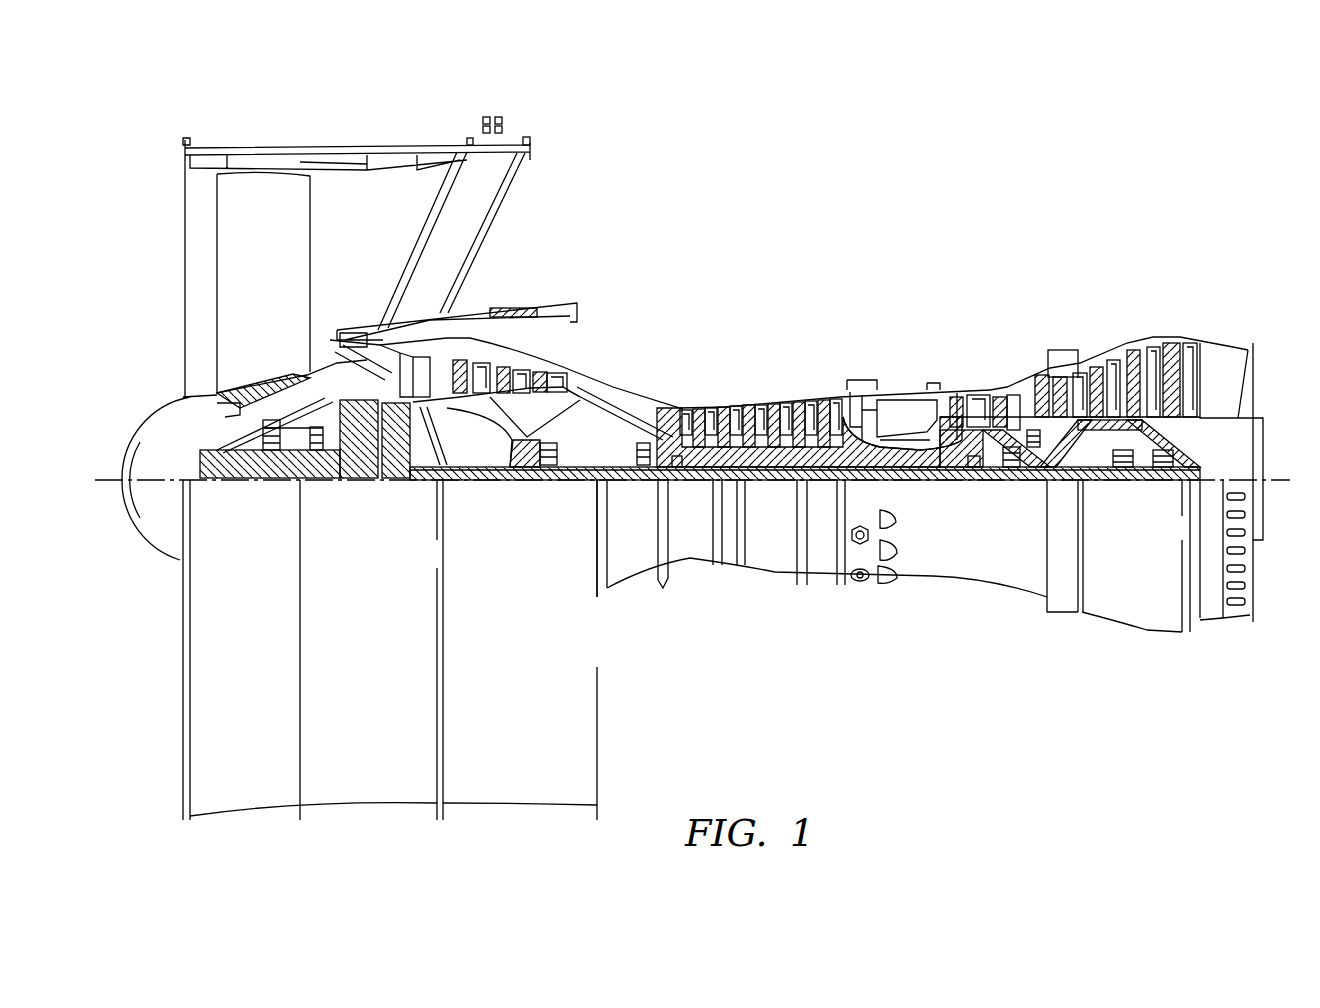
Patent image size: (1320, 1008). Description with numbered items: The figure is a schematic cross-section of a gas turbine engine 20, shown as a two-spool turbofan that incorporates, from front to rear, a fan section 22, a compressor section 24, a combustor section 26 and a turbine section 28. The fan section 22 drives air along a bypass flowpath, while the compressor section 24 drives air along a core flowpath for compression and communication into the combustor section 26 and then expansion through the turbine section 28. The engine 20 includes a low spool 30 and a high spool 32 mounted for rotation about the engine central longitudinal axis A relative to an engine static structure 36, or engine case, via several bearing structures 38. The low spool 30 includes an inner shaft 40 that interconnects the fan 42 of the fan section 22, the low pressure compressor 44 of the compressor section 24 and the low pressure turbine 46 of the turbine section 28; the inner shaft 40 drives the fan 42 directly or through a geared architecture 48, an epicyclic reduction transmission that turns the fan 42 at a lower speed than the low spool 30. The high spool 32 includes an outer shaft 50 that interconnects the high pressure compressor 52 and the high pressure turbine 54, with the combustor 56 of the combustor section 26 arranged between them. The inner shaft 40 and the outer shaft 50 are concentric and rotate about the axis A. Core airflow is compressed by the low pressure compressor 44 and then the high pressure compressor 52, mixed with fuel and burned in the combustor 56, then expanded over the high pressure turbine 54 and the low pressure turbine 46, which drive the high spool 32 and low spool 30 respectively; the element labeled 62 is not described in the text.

The gas turbine engine 20 is at (1039, 173).
The fan section 22 is at (437, 125).
The compressor section 24 is at (845, 270).
The combustor section 26 is at (960, 270).
The turbine section 28 is at (1190, 270).
The low spool 30 is at (779, 494).
The high spool 32 is at (815, 399).
The engine static structure 36 is at (827, 592).
The bearing structures 38 is at (470, 543).
The inner shaft 40 is at (622, 483).
The fan 42 is at (274, 277).
The low pressure compressor 44 is at (520, 365).
The low pressure turbine 46 is at (1100, 352).
The geared architecture 48 is at (390, 483).
The outer shaft 50 is at (910, 483).
The high pressure compressor 52 is at (745, 425).
The high pressure turbine 54 is at (975, 385).
The combustor 56 is at (900, 415).
The bearing 62 is at (680, 483).
The engine central longitudinal axis A is at (1283, 470).